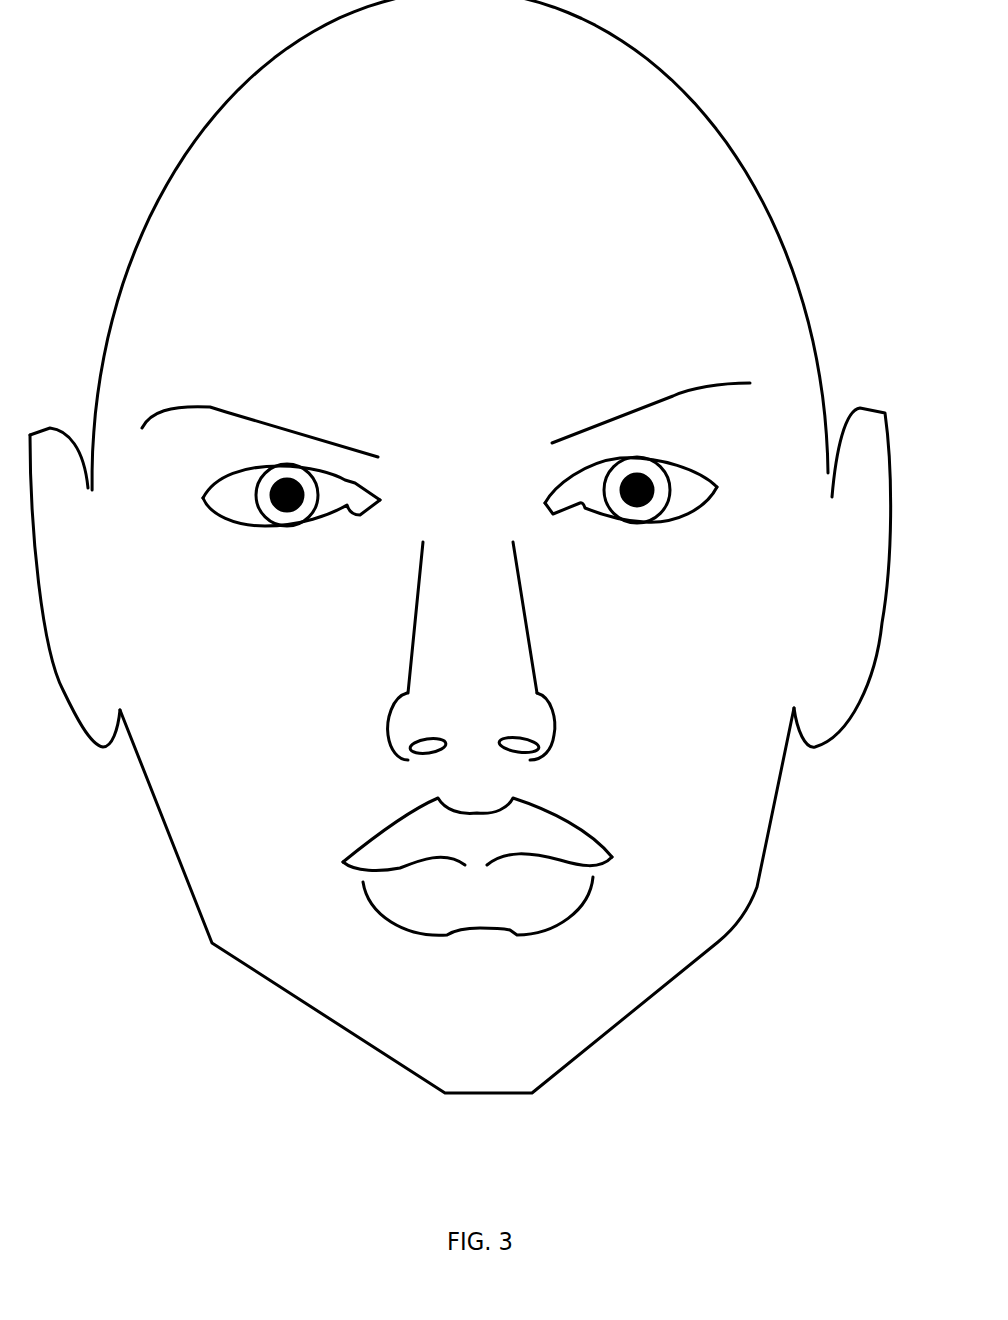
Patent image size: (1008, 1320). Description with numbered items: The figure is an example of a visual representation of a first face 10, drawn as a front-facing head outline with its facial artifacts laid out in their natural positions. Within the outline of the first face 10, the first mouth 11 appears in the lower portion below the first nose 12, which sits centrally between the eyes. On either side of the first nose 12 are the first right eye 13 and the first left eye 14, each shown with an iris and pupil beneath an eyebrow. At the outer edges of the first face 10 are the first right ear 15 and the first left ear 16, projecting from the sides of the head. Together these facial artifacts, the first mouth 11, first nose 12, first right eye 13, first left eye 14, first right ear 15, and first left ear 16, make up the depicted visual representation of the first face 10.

The first face 10 is at (300, 1135).
The first mouth 11 is at (532, 902).
The first nose 12 is at (475, 687).
The first right eye 13 is at (280, 530).
The first left eye 14 is at (648, 527).
The first right ear 15 is at (83, 586).
The first left ear 16 is at (860, 643).